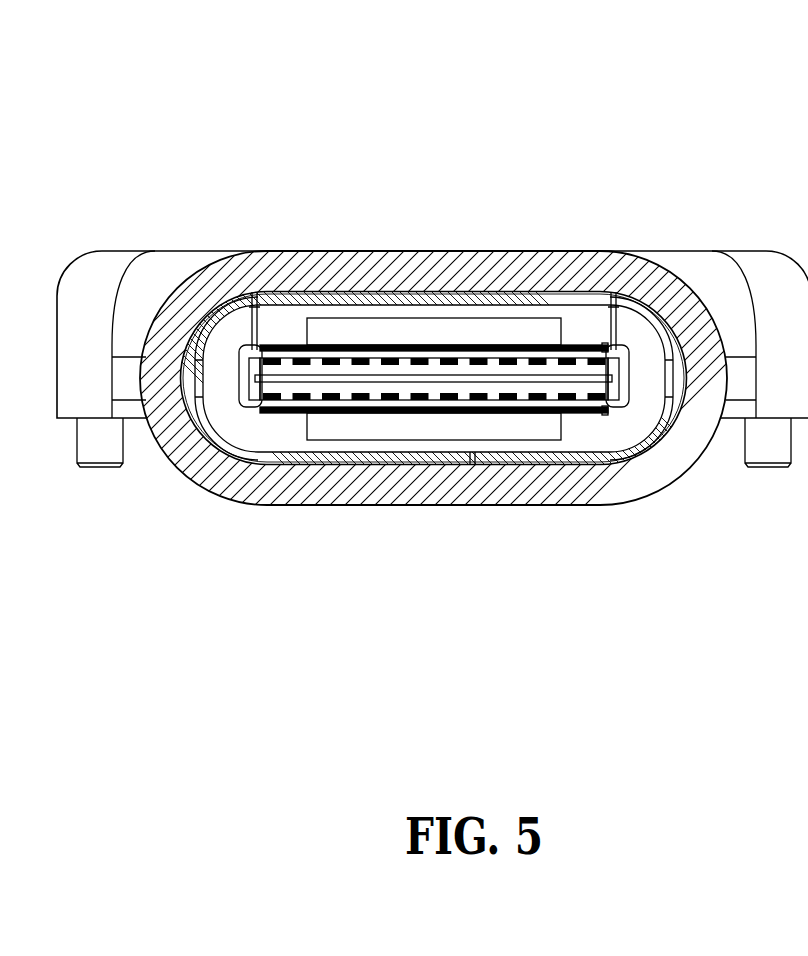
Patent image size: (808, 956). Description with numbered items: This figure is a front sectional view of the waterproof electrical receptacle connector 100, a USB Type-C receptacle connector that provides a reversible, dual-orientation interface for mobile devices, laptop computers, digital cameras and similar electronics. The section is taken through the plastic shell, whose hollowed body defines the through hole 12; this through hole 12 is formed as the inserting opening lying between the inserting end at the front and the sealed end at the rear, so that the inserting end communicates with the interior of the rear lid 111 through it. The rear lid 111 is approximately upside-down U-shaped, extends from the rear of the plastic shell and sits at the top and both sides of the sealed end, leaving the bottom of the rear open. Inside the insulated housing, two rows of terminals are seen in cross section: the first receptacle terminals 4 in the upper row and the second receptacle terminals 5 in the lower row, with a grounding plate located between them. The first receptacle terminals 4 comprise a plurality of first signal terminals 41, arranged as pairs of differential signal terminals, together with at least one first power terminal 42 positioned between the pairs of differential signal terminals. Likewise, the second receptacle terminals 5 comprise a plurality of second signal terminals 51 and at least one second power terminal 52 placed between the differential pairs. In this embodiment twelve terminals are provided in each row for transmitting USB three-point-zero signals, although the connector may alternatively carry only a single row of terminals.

The waterproof electrical receptacle connector 100 is at (407, 46).
The rear lid 111 is at (133, 250).
The through hole 12 is at (232, 428).
The first receptacle terminals 4 is at (579, 350).
The first signal terminals 41 is at (278, 352).
The first power terminal 42 is at (336, 375).
The second receptacle terminals 5 is at (579, 406).
The second signal terminals 51 is at (275, 410).
The second power terminal 52 is at (338, 385).